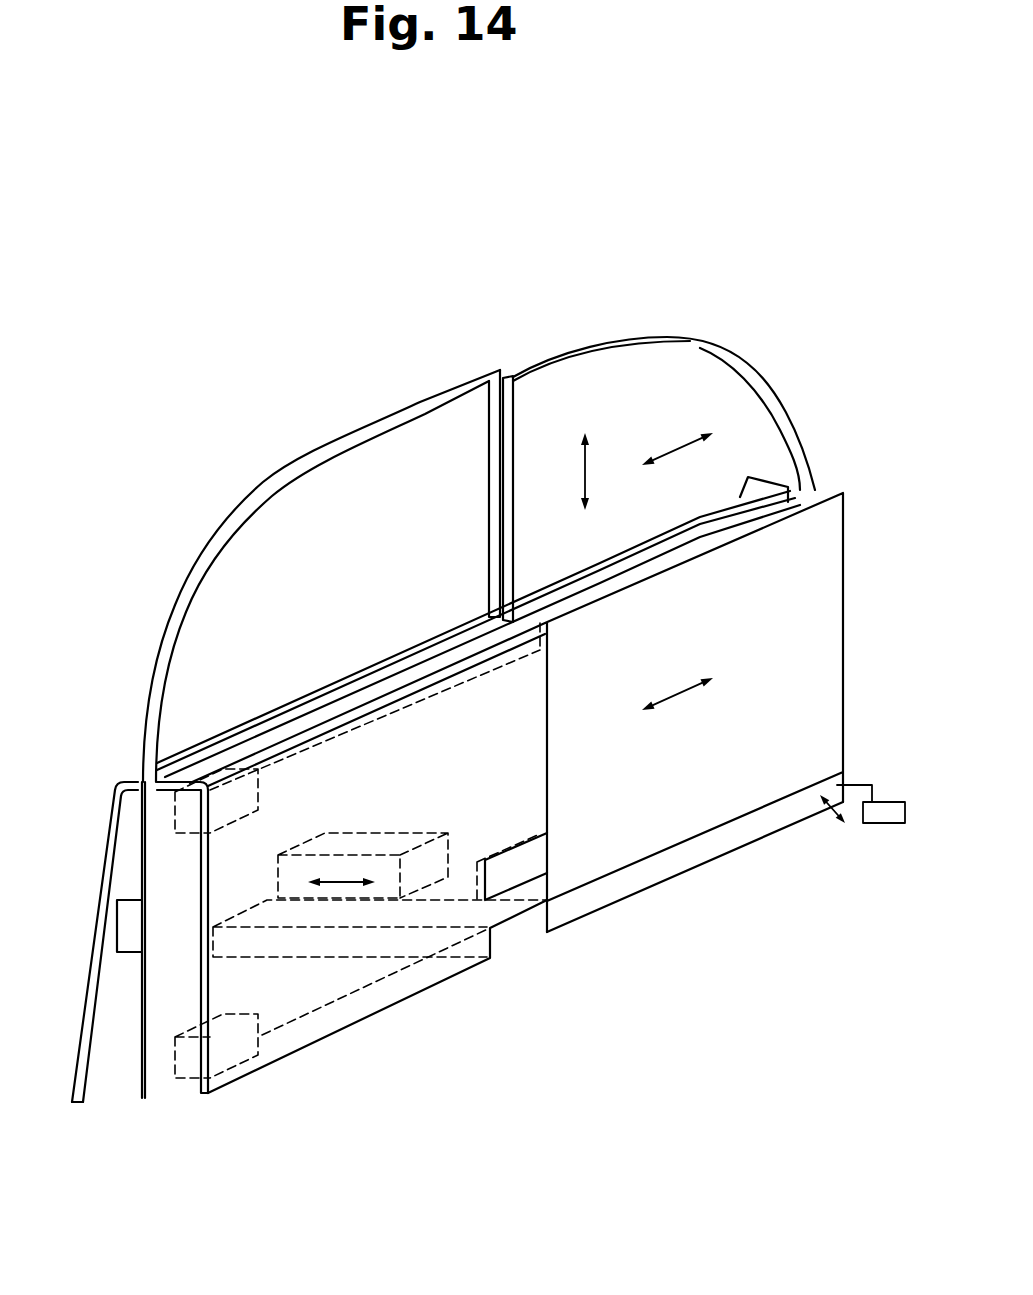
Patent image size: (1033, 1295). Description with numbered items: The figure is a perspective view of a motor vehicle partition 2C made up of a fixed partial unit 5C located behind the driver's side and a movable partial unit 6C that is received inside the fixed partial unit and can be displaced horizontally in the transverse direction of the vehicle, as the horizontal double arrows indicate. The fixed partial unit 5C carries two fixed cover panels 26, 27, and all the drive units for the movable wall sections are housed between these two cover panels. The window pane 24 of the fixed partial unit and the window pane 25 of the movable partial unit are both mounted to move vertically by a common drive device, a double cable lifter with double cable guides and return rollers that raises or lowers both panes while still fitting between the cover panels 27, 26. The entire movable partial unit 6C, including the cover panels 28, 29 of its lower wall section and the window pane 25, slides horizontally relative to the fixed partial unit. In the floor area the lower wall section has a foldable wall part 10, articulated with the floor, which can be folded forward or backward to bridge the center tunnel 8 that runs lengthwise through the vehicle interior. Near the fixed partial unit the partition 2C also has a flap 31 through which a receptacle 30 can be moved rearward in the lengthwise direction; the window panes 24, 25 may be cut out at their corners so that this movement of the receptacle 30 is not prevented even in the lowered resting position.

The partition 2C is at (479, 513).
The window pane of the fixed partial unit 24 is at (260, 530).
The window pane of the movable partial unit 25 is at (693, 367).
The cover panel 26 is at (103, 867).
The cover panel 27 is at (258, 987).
The cover panel of the lower wall section 28 is at (823, 677).
The cover panel of the lower wall section 29 is at (748, 478).
The receptacle 30 is at (388, 885).
The flap 31 is at (527, 858).
The center tunnel 8 is at (513, 935).
The foldable wall part 10 is at (775, 820).
The fixed partial unit 5C is at (360, 1040).
The movable partial unit 6C is at (732, 858).